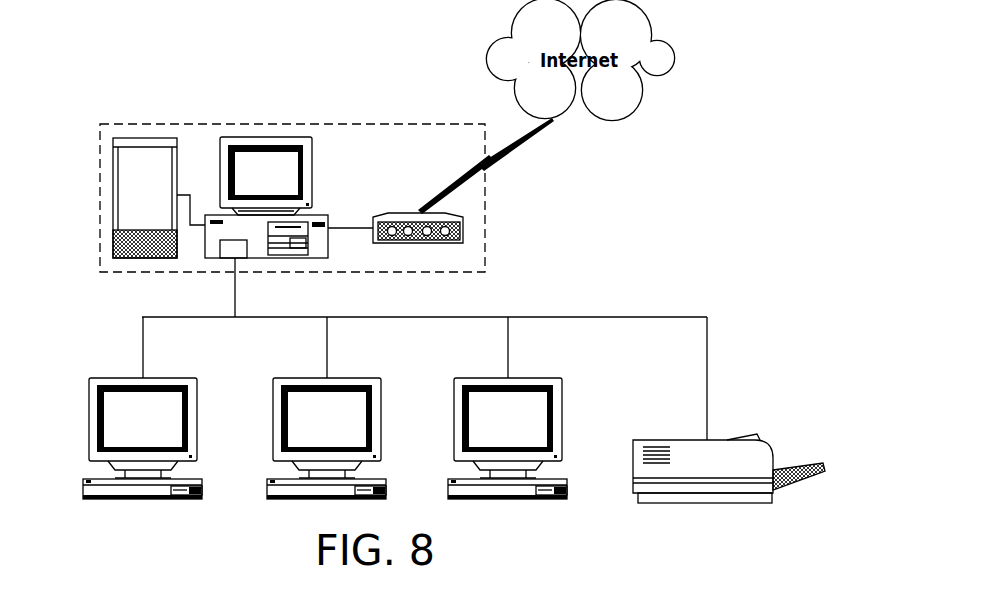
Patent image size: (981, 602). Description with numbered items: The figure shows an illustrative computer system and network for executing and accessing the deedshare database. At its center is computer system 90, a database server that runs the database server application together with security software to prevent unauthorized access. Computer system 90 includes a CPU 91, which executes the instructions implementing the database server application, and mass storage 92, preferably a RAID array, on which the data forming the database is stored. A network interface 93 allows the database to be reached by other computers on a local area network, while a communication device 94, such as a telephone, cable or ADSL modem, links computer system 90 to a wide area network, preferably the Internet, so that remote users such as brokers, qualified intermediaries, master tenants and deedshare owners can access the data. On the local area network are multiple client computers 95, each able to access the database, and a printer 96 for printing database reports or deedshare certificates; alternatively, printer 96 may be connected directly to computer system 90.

The computer system 90 is at (358, 138).
The CPU 91 is at (320, 235).
The mass storage 92 is at (145, 158).
The network interface 93 is at (233, 252).
The communication device 94 is at (465, 233).
The client computers 95 is at (112, 420).
The printer 96 is at (722, 455).